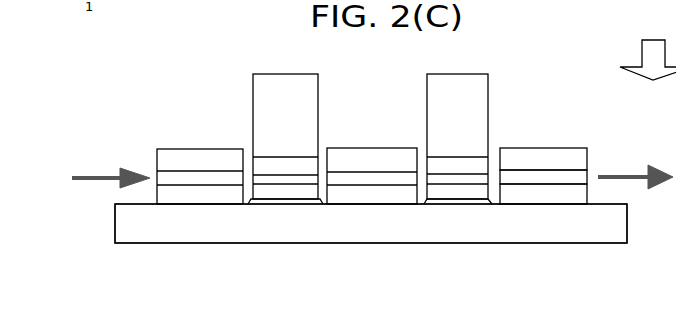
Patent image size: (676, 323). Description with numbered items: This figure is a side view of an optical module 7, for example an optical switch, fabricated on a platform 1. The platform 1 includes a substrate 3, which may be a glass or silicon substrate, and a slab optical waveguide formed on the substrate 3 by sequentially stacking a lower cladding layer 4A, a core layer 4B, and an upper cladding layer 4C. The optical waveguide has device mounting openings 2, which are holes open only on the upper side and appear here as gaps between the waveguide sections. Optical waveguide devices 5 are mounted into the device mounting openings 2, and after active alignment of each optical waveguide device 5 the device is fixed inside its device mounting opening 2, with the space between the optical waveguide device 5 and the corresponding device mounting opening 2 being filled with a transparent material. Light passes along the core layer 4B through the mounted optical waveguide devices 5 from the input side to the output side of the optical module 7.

The platform 1 is at (174, 246).
The device mounting opening 2 is at (325, 141).
The substrate 3 is at (473, 222).
The lower cladding layer 4A is at (537, 192).
The core layer 4B is at (578, 180).
The upper cladding layer 4C is at (547, 156).
The optical waveguide device 5 is at (272, 103).
The optical module 7 is at (172, 118).